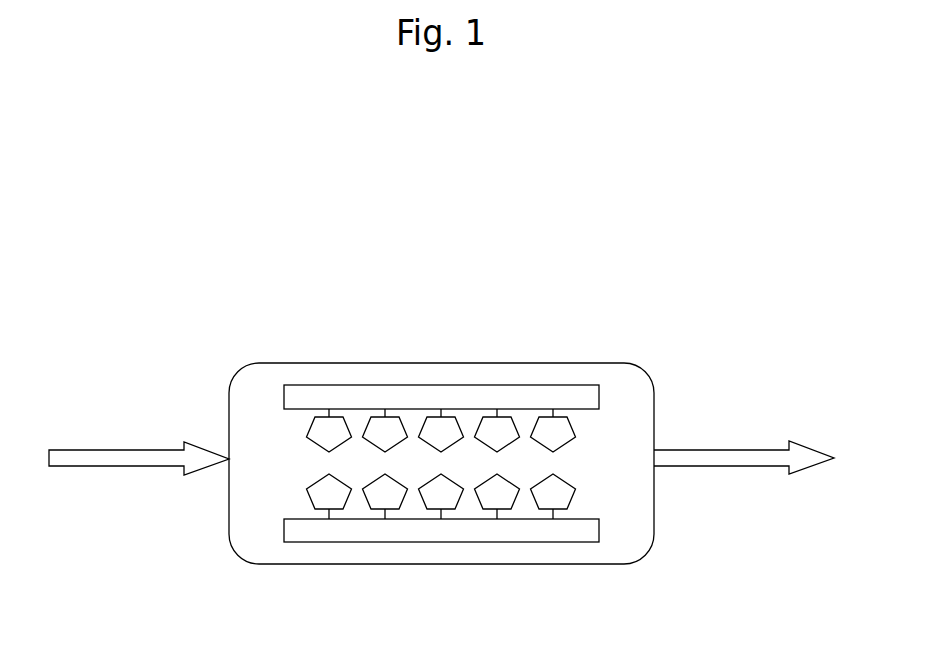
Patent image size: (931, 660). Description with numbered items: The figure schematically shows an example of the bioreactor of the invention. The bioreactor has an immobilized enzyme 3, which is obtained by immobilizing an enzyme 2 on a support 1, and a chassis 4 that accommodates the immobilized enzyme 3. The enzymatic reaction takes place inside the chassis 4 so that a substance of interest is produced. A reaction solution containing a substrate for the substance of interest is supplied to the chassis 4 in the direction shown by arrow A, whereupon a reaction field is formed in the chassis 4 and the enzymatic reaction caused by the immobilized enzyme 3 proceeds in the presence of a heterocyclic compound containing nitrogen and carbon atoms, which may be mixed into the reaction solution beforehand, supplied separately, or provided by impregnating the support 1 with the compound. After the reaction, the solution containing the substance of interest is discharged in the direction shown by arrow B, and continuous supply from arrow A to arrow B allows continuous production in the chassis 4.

The support 1 is at (352, 393).
The enzyme 2 is at (565, 432).
The immobilized enzyme 3 is at (500, 362).
The chassis 4 is at (317, 563).
The arrow A is at (112, 457).
The arrow B is at (722, 458).